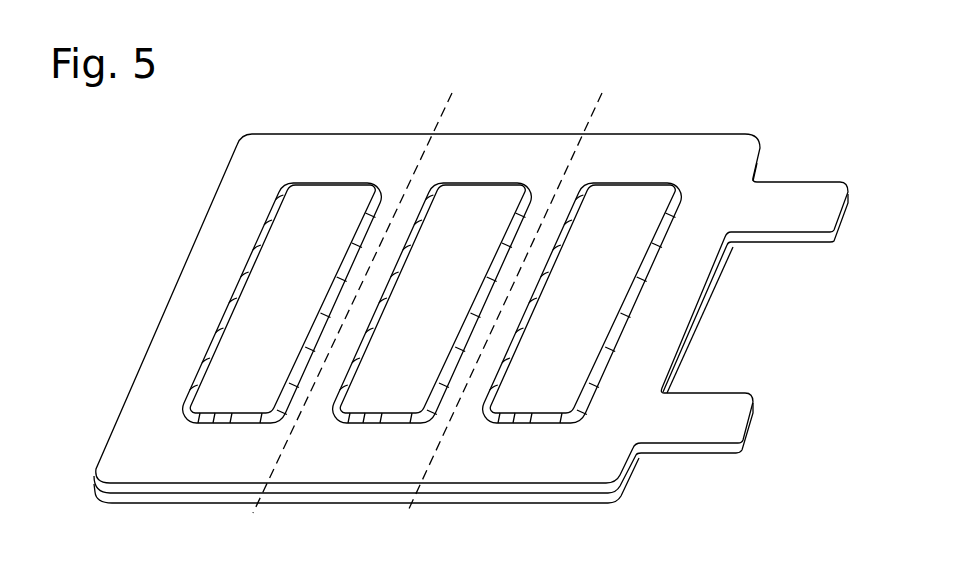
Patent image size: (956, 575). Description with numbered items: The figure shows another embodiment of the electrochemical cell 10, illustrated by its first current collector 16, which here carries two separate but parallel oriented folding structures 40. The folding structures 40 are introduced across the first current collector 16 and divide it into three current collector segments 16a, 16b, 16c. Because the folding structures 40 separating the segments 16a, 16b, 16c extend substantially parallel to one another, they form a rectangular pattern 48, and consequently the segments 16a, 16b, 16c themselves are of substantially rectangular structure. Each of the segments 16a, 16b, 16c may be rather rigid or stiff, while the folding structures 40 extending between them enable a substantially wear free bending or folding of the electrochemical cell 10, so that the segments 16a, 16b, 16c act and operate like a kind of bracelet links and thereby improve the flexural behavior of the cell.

The electrochemical cell 10 is at (471, 277).
The first current collector 16 is at (657, 138).
The current collector segment 16a is at (538, 400).
The current collector segment 16b is at (372, 400).
The current collector segment 16c is at (218, 403).
The folding structures 40 is at (437, 127).
The rectangular pattern 48 is at (427, 277).